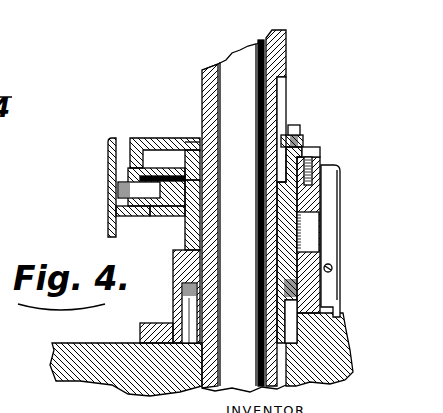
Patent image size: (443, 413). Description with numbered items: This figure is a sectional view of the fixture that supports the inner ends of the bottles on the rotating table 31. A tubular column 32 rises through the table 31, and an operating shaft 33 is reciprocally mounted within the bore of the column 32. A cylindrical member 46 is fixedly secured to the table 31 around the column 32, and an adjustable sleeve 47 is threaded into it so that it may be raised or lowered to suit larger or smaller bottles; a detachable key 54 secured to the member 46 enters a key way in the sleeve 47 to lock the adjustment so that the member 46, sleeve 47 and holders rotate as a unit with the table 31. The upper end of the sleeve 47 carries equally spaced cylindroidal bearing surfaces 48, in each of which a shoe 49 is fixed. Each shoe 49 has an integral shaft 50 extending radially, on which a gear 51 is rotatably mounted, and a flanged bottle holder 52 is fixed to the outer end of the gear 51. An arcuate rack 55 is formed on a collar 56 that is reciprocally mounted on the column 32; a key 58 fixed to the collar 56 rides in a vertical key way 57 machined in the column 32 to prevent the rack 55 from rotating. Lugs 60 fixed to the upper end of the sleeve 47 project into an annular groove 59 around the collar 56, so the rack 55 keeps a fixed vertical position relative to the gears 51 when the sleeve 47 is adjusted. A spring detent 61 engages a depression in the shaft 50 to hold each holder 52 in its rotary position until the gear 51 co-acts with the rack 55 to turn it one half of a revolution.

The table 31 is at (113, 347).
The tubular column 32 is at (206, 88).
The operating shaft 33 is at (242, 213).
The cylindrical member 46 is at (173, 309).
The adjustable sleeve 47 is at (197, 231).
The cylindroidal bearing surface 48 is at (168, 202).
The shoe 49 is at (180, 166).
The shaft 50 is at (145, 212).
The gear 51 is at (115, 150).
The flanged bottle holder 52 is at (110, 221).
The key 54 is at (327, 212).
The arcuate rack 55 is at (131, 156).
The collar 56 is at (192, 148).
The key way 57 is at (282, 93).
The key 58 is at (301, 128).
The annular groove 59 is at (186, 143).
The lug 60 is at (318, 160).
The spring detent 61 is at (118, 176).